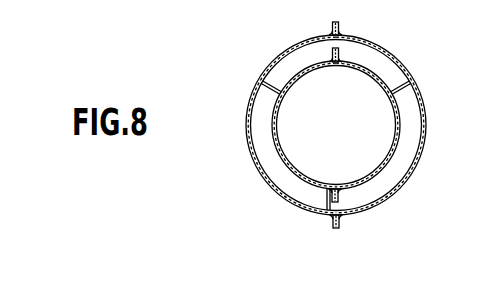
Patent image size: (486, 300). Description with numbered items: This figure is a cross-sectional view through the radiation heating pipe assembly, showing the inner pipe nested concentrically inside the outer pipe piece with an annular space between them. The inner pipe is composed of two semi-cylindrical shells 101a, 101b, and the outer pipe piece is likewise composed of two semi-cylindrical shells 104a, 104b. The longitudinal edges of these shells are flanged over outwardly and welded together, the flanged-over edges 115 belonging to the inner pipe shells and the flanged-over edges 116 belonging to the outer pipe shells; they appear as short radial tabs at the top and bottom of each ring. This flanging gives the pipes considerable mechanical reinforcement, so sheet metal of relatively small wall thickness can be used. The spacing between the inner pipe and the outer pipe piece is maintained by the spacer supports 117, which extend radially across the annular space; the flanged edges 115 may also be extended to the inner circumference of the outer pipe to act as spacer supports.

The semi-cylindrical shell of the inner pipe 101a is at (401, 110).
The semi-cylindrical shell of the inner pipe 101b is at (272, 147).
The semi-cylindrical shell of the outer pipe piece 104a is at (421, 143).
The semi-cylindrical shell of the outer pipe piece 104b is at (250, 118).
The flanged-over longitudinal edges of the inner pipe 115 is at (330, 52).
The flanged-over longitudinal edges of the outer pipe piece 116 is at (331, 24).
The spacer supports 117 is at (266, 86).